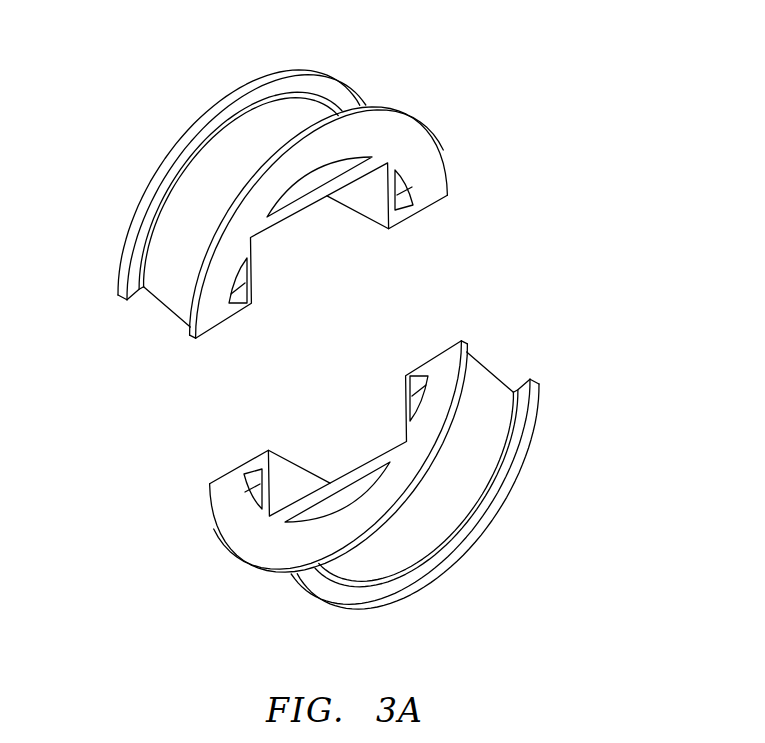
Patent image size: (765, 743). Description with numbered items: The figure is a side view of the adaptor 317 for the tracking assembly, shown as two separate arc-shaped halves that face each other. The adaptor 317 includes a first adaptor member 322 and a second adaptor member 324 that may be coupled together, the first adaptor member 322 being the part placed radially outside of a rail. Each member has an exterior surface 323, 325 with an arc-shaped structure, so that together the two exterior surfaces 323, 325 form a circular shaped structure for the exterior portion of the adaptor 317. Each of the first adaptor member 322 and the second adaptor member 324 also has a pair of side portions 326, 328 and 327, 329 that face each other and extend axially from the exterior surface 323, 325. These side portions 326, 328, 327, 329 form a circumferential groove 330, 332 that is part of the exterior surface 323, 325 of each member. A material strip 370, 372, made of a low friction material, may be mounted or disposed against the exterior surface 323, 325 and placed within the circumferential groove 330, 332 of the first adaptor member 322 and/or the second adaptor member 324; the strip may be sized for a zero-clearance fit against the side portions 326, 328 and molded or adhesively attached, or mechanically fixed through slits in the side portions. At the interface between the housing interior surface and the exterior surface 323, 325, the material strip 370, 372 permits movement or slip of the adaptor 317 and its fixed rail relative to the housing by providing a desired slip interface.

The adaptor 317 is at (551, 113).
The first adaptor member 322 is at (161, 302).
The exterior surface 323 is at (343, 114).
The second adaptor member 324 is at (487, 388).
The exterior surface 325 is at (330, 571).
The side portion 326 is at (177, 153).
The side portion 327 is at (517, 472).
The side portion 328 is at (421, 132).
The side portion 329 is at (470, 347).
The circumferential groove 330 is at (160, 222).
The circumferential groove 332 is at (478, 507).
The material strip 370 is at (305, 112).
The material strip 372 is at (428, 517).